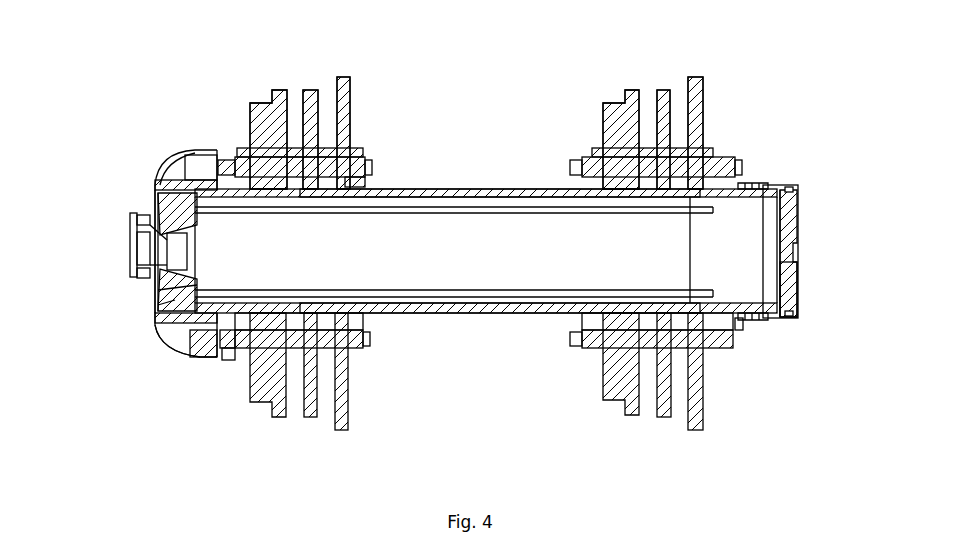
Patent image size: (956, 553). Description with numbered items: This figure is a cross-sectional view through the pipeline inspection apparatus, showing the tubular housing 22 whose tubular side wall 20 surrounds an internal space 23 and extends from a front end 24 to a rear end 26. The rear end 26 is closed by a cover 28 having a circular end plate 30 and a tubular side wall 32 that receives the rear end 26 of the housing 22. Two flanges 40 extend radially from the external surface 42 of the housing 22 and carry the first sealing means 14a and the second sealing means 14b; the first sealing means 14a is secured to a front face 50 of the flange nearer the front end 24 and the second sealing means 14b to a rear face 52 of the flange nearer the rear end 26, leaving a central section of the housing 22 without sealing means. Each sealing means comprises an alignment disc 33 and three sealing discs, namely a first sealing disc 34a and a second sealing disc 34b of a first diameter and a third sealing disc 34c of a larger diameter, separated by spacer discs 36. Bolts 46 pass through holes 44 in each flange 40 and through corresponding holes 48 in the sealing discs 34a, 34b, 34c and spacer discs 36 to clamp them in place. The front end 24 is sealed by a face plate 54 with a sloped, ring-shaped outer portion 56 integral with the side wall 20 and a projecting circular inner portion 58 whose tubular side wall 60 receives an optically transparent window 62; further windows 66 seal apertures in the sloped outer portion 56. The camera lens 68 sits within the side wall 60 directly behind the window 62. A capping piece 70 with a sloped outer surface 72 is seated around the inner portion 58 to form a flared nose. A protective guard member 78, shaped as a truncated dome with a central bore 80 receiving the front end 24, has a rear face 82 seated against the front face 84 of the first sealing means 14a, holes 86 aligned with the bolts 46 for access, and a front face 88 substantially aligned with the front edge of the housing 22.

The first sealing means 14a is at (298, 66).
The second sealing means 14b is at (652, 64).
The tubular side wall 20 is at (427, 313).
The tubular housing 22 is at (457, 189).
The internal space 23 is at (445, 265).
The front end 24 is at (214, 358).
The rear end 26 is at (746, 322).
The cover 28 is at (797, 232).
The circular end plate 30 is at (797, 292).
The tubular side wall 32 is at (764, 183).
The alignment disc 33 is at (262, 402).
The first sealing disc 34a is at (277, 92).
The second sealing disc 34b is at (312, 92).
The third sealing disc 34c is at (344, 95).
The spacer discs 36 is at (306, 350).
The flanges 40 is at (353, 157).
The external surface 42 is at (506, 316).
The holes 44 is at (355, 348).
The bolts 46 is at (370, 340).
The holes 48 is at (278, 160).
The front face 50 is at (352, 183).
The rear face 52 is at (580, 322).
The face plate 54 is at (162, 305).
The outer portion 56 is at (172, 313).
The inner portion 58 is at (145, 282).
The tubular side wall 60 is at (160, 200).
The optically transparent window 62 is at (132, 257).
The optically transparent window 66 is at (162, 280).
The camera lens 68 is at (175, 255).
The capping piece 70 is at (140, 218).
The outer surface 72 is at (153, 188).
The guard member 78 is at (192, 356).
The central bore 80 is at (205, 170).
The rear face 82 is at (232, 362).
The front face 84 is at (233, 330).
The holes 86 is at (188, 157).
The front face 88 is at (148, 335).